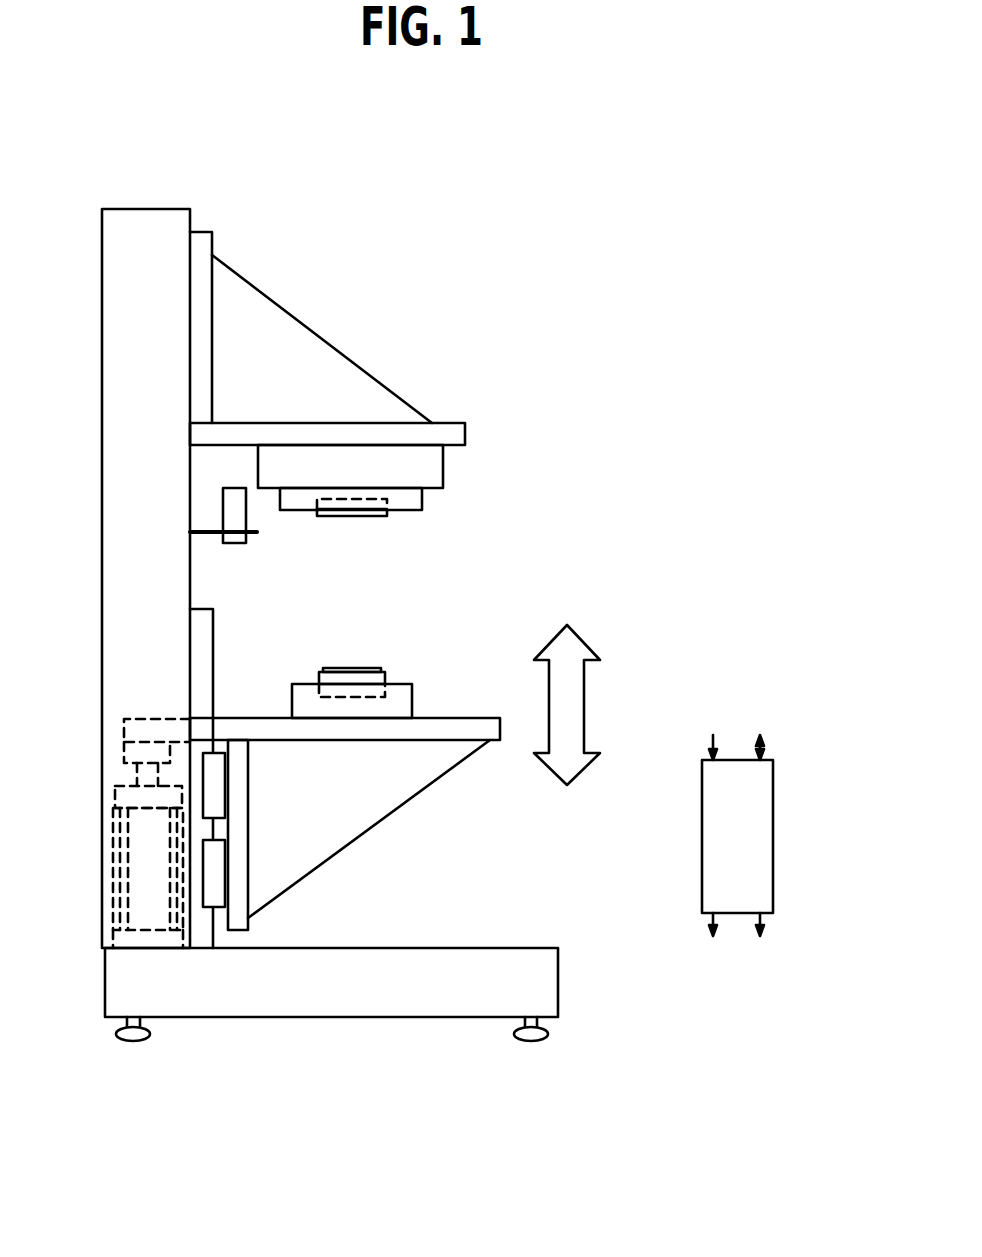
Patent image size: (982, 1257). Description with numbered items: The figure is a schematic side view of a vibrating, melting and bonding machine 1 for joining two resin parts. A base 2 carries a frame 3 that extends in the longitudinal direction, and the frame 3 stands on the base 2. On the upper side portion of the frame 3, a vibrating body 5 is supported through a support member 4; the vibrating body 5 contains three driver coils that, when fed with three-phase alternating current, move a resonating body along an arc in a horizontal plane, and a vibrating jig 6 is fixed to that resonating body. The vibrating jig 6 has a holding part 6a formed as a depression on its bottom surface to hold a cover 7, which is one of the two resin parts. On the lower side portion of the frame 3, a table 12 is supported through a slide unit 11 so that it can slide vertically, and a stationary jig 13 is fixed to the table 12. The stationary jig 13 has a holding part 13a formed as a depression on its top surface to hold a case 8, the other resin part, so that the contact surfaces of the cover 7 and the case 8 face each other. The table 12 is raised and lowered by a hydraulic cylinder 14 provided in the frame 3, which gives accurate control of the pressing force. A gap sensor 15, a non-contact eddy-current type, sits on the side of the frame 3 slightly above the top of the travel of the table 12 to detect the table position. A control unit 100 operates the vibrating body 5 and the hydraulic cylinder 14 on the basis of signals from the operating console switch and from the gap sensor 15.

The vibrating, melting and bonding machine 1 is at (475, 252).
The base 2 is at (365, 1000).
The frame 3 is at (127, 560).
The support member 4 is at (382, 433).
The vibrating body 5 is at (428, 468).
The vibrating jig 6 is at (413, 497).
The holding part 6a is at (390, 500).
The cover 7 is at (370, 516).
The case 8 is at (377, 679).
The slide unit 11 is at (215, 935).
The table 12 is at (477, 725).
The stationary jig 13 is at (402, 705).
The holding part 13a is at (387, 691).
The hydraulic cylinder 14 is at (143, 850).
The gap sensor 15 is at (232, 507).
The control unit 100 is at (753, 828).